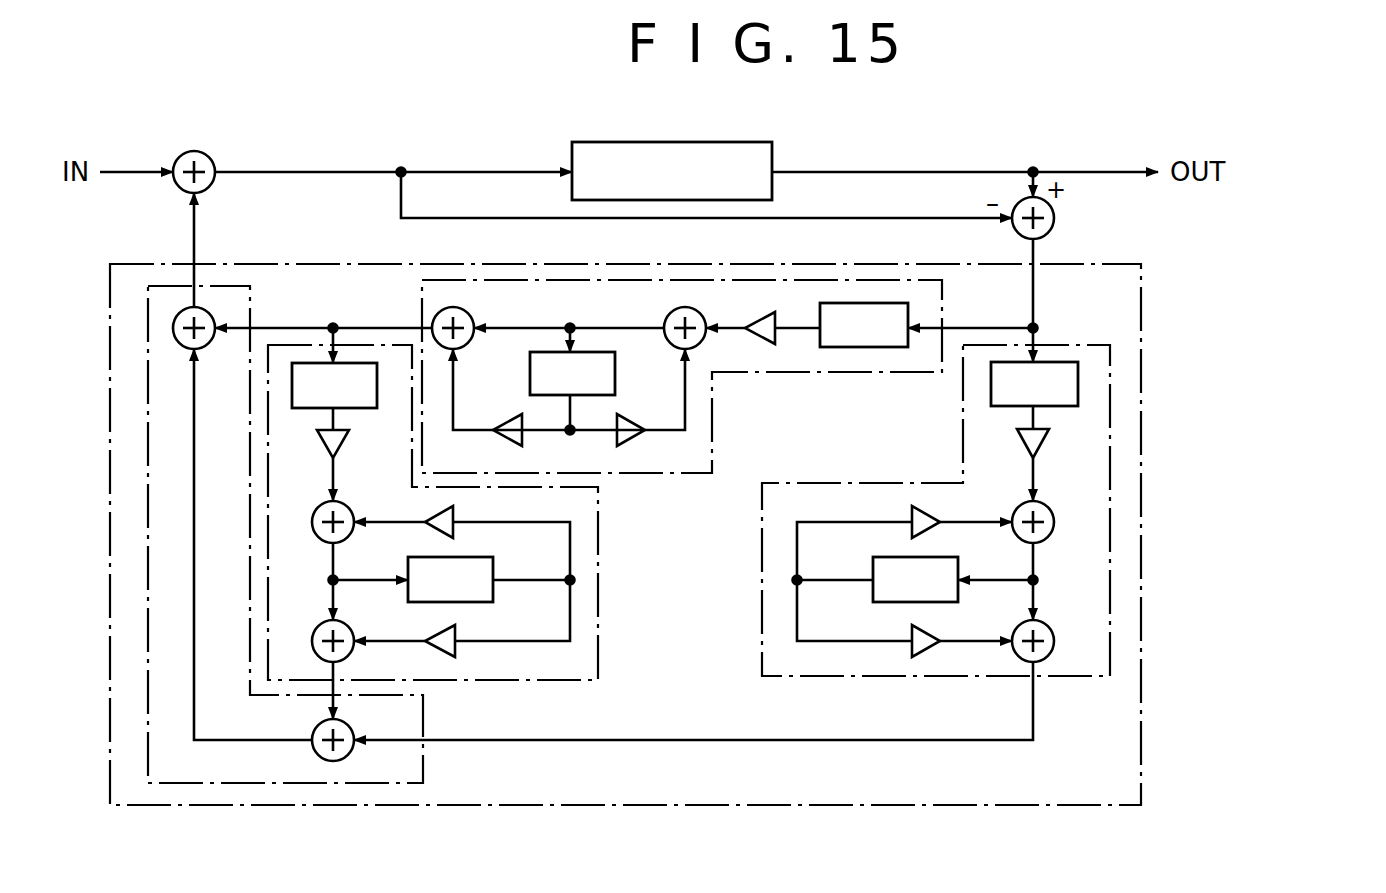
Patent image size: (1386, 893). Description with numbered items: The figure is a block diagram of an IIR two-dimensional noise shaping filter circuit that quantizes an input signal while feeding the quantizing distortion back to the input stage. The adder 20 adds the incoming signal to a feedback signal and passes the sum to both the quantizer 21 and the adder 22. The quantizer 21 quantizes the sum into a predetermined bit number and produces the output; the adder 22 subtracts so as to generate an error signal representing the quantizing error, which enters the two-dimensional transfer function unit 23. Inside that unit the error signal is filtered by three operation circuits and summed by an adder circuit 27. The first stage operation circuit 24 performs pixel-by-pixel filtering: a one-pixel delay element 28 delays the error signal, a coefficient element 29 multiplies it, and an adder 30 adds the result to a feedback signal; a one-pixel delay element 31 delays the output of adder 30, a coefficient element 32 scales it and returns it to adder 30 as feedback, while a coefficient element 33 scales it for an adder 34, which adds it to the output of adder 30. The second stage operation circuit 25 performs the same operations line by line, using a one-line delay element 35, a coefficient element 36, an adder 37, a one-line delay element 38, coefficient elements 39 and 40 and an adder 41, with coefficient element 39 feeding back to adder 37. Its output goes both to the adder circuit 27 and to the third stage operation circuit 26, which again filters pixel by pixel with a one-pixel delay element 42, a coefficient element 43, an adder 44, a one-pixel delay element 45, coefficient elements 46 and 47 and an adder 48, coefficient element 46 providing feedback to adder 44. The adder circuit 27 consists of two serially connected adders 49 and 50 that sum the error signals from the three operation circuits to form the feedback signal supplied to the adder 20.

The adder 20 is at (209, 156).
The quantizer 21 is at (772, 153).
The adder 22 is at (1054, 220).
The two-dimensional transfer function unit 23 is at (488, 806).
The first stage operation circuit 24 is at (1085, 678).
The second stage operation circuit 25 is at (714, 376).
The third stage operation circuit 26 is at (470, 681).
The adder circuit 27 is at (424, 746).
The one-pixel delay element 28 is at (993, 390).
The coefficient element 29 is at (1041, 440).
The adder 30 is at (1049, 538).
The one-pixel delay element 31 is at (878, 560).
The coefficient element 32 is at (930, 525).
The coefficient element 33 is at (914, 652).
The adder 34 is at (1050, 626).
The one-line delay element 35 is at (830, 303).
The coefficient element 36 is at (757, 313).
The adder 37 is at (701, 344).
The one-line delay element 38 is at (615, 372).
The coefficient element 39 is at (640, 440).
The coefficient element 40 is at (492, 442).
The adder 41 is at (462, 347).
The one-pixel delay element 42 is at (355, 409).
The coefficient element 43 is at (324, 444).
The adder 44 is at (318, 538).
The one-pixel delay element 45 is at (494, 562).
The coefficient element 46 is at (455, 511).
The coefficient element 47 is at (450, 652).
The adder 48 is at (318, 624).
The adder 49 is at (315, 729).
The adder 50 is at (210, 344).